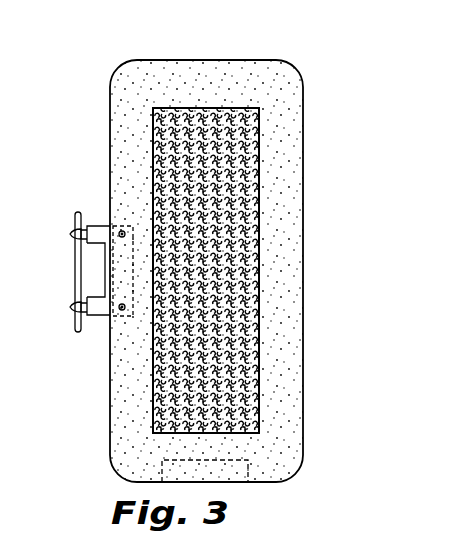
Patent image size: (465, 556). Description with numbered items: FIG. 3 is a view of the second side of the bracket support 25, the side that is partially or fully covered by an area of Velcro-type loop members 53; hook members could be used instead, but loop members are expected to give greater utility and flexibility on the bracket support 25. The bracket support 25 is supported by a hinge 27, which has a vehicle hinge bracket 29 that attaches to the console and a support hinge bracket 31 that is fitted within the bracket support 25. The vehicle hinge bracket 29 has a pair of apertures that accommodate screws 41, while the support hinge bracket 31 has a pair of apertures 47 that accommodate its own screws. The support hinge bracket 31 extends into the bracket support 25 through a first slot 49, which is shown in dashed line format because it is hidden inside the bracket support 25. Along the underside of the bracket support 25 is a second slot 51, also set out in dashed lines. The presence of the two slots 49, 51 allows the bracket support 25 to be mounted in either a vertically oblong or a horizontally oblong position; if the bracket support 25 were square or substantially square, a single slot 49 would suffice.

The bracket support 25 is at (219, 61).
The loop members 53 is at (240, 248).
The second slot 51 is at (248, 468).
The first slot 49 is at (122, 226).
The apertures 47 is at (119, 233).
The vehicle hinge bracket 29 is at (78, 268).
The support hinge bracket 31 is at (101, 316).
The hinge 27 is at (70, 234).
The screws 41 is at (70, 307).